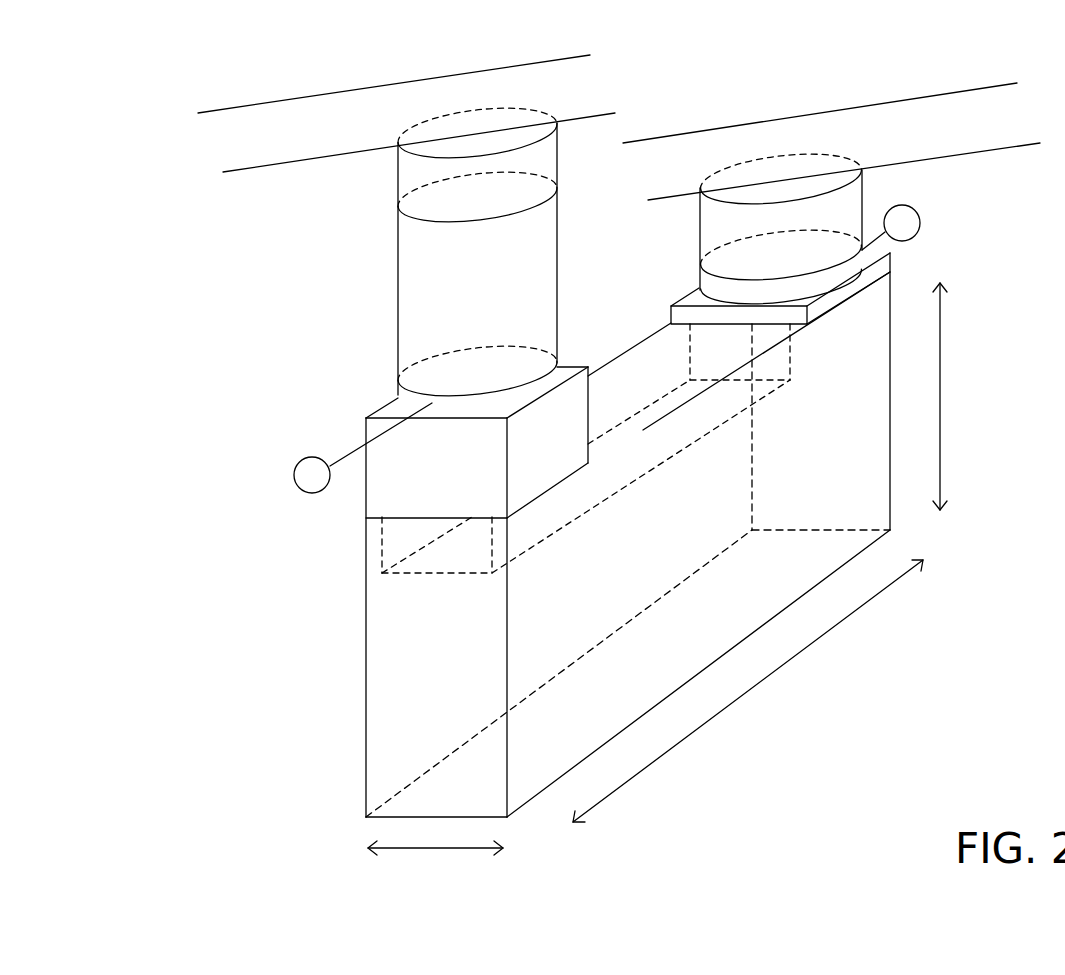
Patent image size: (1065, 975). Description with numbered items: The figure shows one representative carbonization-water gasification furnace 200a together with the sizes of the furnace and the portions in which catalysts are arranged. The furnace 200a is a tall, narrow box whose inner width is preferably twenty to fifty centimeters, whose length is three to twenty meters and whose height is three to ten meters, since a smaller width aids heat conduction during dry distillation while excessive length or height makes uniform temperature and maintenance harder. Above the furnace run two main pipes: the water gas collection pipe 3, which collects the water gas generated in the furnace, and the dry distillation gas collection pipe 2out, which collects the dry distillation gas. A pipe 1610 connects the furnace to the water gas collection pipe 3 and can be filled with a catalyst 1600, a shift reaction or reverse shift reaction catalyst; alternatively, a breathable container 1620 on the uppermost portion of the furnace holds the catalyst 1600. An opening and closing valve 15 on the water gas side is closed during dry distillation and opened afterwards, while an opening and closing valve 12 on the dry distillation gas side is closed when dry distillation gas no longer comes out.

The water gas collection pipe 3 is at (273, 102).
The dry distillation gas collection pipe 2out is at (910, 100).
The opening and closing valve 12 is at (919, 211).
The opening and closing valve 15 is at (299, 461).
The catalyst 1600 is at (425, 280).
The pipe 1610 is at (397, 328).
The breathable container 1620 is at (382, 548).
The carbonization-water gasification furnace 200a is at (367, 675).